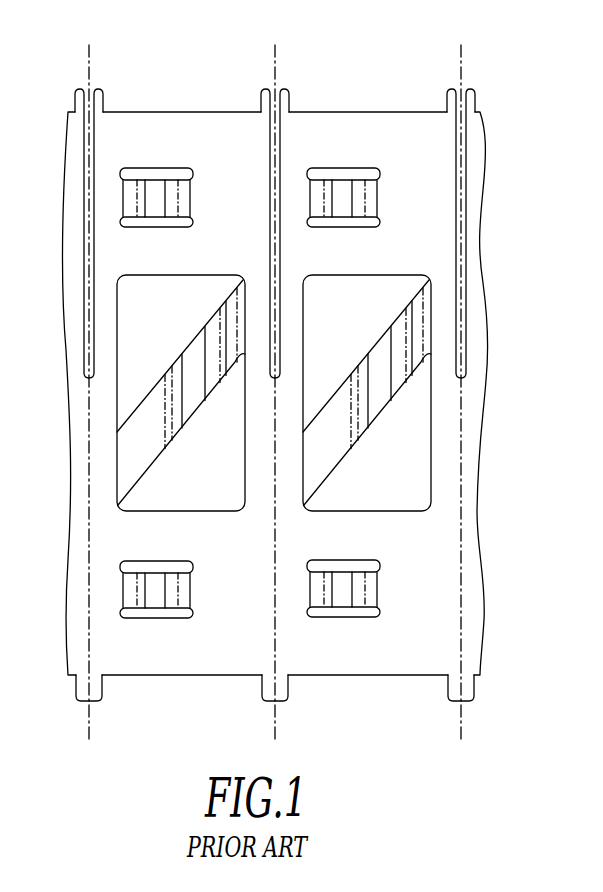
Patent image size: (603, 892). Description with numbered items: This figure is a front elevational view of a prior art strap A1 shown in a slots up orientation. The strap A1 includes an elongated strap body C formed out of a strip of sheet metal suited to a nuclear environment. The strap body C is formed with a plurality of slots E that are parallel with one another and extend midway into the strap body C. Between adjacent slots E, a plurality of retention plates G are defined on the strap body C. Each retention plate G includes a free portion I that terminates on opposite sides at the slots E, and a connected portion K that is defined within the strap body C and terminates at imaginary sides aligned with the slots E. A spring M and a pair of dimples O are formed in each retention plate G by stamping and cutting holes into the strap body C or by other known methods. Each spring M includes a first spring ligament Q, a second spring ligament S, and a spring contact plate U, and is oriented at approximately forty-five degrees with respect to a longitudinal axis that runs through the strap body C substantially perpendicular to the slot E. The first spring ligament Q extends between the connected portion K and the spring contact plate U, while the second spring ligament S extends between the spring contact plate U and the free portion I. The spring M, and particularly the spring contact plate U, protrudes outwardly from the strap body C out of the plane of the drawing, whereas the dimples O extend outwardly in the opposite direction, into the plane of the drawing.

The strap A1 is at (316, 102).
The strap body C is at (497, 284).
The free portion I is at (207, 111).
The slot E is at (92, 91).
The connected portion K is at (148, 675).
The retention plate G is at (198, 685).
The dimple O is at (157, 178).
The spring M is at (203, 430).
The spring contact plate U is at (188, 347).
The first spring ligament Q is at (147, 470).
The second spring ligament S is at (218, 311).